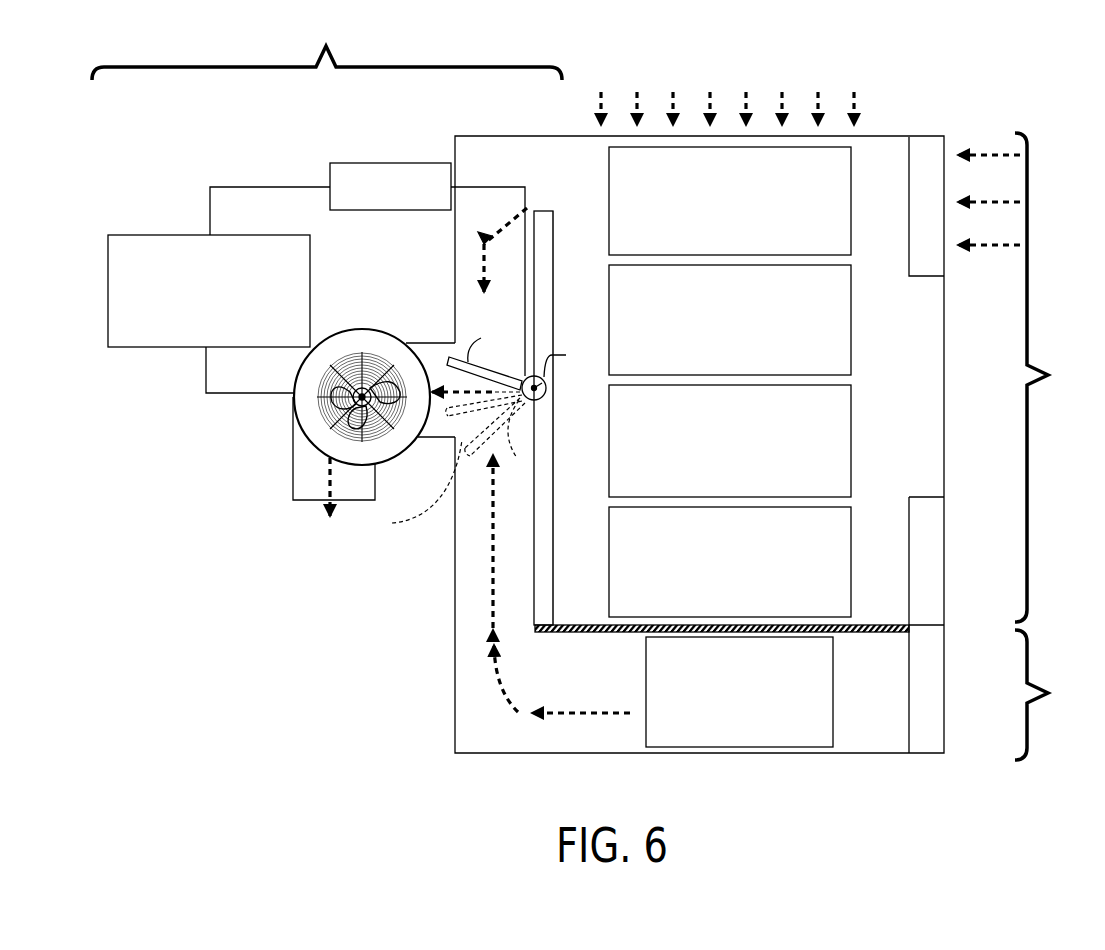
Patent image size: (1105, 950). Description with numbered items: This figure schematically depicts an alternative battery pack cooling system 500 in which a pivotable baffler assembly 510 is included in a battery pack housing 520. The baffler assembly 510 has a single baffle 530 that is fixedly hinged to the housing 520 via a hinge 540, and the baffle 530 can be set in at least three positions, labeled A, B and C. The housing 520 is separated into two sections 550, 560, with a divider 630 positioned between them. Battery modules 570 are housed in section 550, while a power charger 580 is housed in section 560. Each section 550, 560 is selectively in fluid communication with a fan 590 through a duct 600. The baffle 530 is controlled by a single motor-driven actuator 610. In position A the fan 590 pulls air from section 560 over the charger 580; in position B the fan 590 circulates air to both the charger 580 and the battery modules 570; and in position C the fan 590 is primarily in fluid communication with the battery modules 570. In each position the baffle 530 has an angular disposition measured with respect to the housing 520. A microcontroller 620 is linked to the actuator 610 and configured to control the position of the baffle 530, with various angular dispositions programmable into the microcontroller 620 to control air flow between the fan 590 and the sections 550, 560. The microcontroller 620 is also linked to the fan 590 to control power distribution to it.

The battery pack cooling system 500 is at (327, 50).
The baffler assembly 510 is at (562, 383).
The battery pack housing 520 is at (878, 134).
The baffle 530 is at (499, 368).
The hinge 540 is at (538, 400).
The section 550 is at (999, 443).
The section 560 is at (1052, 695).
The battery modules 570 is at (852, 548).
The power charger 580 is at (833, 703).
The fan 590 is at (346, 406).
The duct 600 is at (455, 268).
The actuator 610 is at (345, 171).
The microcontroller 620 is at (128, 248).
The divider 630 is at (574, 623).